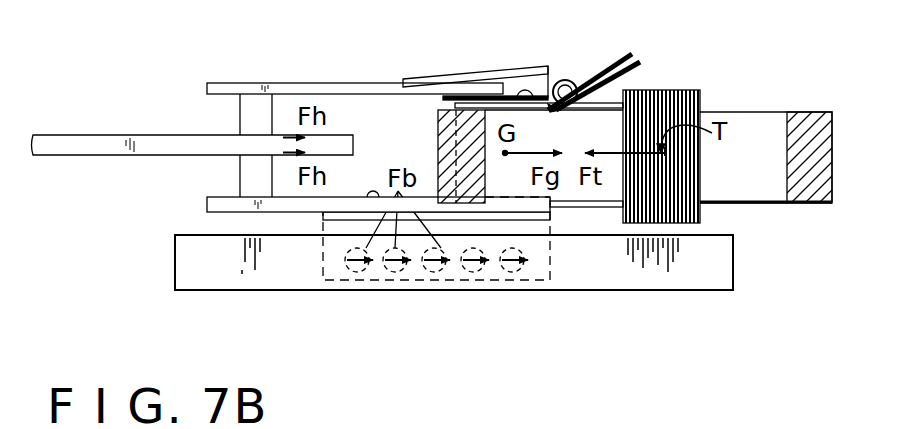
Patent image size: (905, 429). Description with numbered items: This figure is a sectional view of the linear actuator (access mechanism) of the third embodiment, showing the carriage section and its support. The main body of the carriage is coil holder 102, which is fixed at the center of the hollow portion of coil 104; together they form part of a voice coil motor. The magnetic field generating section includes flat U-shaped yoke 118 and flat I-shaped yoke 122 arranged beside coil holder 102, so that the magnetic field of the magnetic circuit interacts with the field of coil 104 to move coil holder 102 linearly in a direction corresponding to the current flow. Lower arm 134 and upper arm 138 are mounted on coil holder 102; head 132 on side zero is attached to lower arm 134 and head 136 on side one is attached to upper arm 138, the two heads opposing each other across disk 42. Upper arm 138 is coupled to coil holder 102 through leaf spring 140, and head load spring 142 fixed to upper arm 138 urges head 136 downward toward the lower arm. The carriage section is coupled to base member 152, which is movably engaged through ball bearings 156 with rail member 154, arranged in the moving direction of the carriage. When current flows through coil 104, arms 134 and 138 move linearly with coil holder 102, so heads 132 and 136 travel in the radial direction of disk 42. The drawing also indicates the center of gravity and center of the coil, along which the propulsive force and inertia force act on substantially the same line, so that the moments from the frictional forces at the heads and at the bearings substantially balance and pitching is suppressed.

The disk 42 is at (90, 157).
The coil holder 102 is at (597, 192).
The coil 104 is at (700, 99).
The U-shaped yoke 118 is at (808, 117).
The I-shaped yoke 122 is at (438, 135).
The head 132 is at (240, 177).
The lower arm 134 is at (207, 205).
The head 136 is at (240, 112).
The upper arm 138 is at (318, 83).
The leaf spring 140 is at (508, 88).
The head load spring 142 is at (557, 66).
The base member 152 is at (324, 222).
The rail member 154 is at (697, 275).
The ball bearings 156 is at (412, 272).